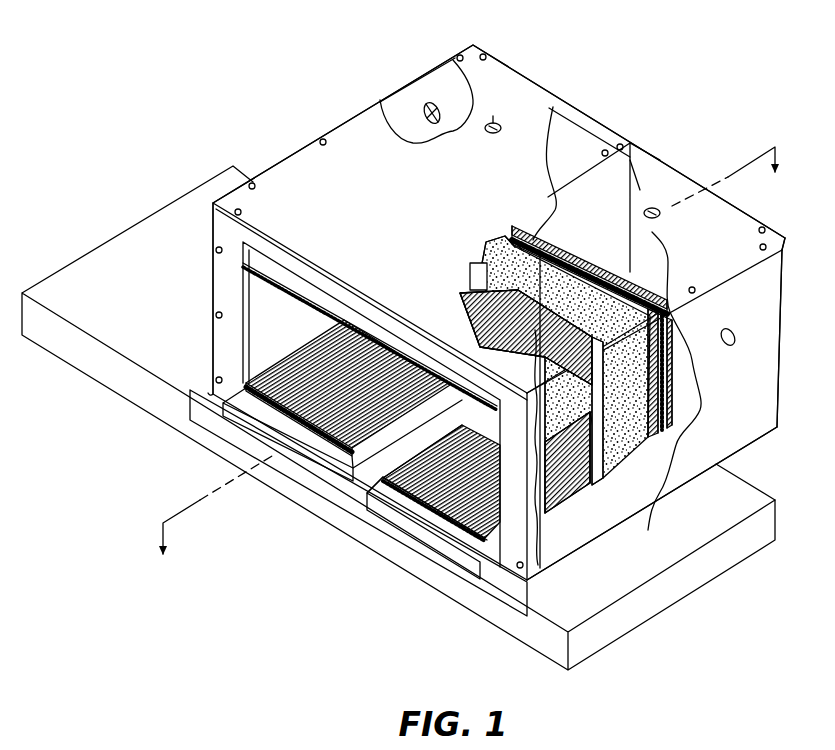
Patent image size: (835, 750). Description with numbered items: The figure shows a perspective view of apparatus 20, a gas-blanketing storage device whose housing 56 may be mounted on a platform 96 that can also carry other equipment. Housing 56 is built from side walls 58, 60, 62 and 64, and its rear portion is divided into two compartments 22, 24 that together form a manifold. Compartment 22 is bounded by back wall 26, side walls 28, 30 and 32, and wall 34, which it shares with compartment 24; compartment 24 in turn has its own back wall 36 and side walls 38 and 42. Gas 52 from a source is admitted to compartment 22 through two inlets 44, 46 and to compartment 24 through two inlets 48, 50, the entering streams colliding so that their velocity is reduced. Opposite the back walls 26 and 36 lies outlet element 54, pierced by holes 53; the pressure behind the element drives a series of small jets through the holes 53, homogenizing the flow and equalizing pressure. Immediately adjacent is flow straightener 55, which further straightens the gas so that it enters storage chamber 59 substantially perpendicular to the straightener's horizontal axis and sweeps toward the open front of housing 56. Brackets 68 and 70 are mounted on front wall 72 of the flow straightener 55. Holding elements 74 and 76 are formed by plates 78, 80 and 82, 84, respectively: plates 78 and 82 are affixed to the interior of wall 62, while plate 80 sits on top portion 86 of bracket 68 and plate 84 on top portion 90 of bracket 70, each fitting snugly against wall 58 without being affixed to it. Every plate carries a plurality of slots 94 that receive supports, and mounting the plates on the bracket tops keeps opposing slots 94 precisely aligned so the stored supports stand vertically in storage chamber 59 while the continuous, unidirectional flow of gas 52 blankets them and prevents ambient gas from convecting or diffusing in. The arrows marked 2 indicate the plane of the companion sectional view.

The apparatus 20 is at (654, 87).
The compartment 22 is at (636, 175).
The compartment 24 is at (585, 150).
The back wall 26 is at (782, 265).
The side wall 28 is at (763, 291).
The side wall 30 is at (755, 443).
The side wall 32 is at (733, 222).
The wall 34 is at (613, 202).
The back wall 36 is at (565, 132).
The side wall 38 is at (432, 63).
The side wall 42 is at (497, 73).
The inlet 44 is at (656, 220).
The inlet 46 is at (737, 327).
The inlet 48 is at (494, 137).
The inlet 50 is at (418, 110).
The gas 52 is at (425, 109).
The holes 53 is at (660, 328).
The outlet element 54 is at (668, 383).
The flow straightener 55 is at (592, 258).
The housing 56 is at (296, 142).
The side wall 58 is at (373, 236).
The storage chamber 59 is at (245, 330).
The side wall 60 is at (703, 467).
The side wall 62 is at (421, 462).
The side wall 64 is at (284, 313).
The bracket 68 is at (605, 480).
The bracket 70 is at (497, 233).
The front wall 72 is at (605, 320).
The holding element 74 is at (456, 561).
The holding element 76 is at (222, 410).
The plate 78 is at (372, 487).
The plate 80 is at (460, 294).
The plate 82 is at (300, 364).
The plate 84 is at (480, 270).
The top portion 86 is at (513, 236).
The top portion 90 is at (473, 270).
The slots 94 is at (242, 276).
The platform 96 is at (632, 617).
The section line 2- 2 is at (471, 369).